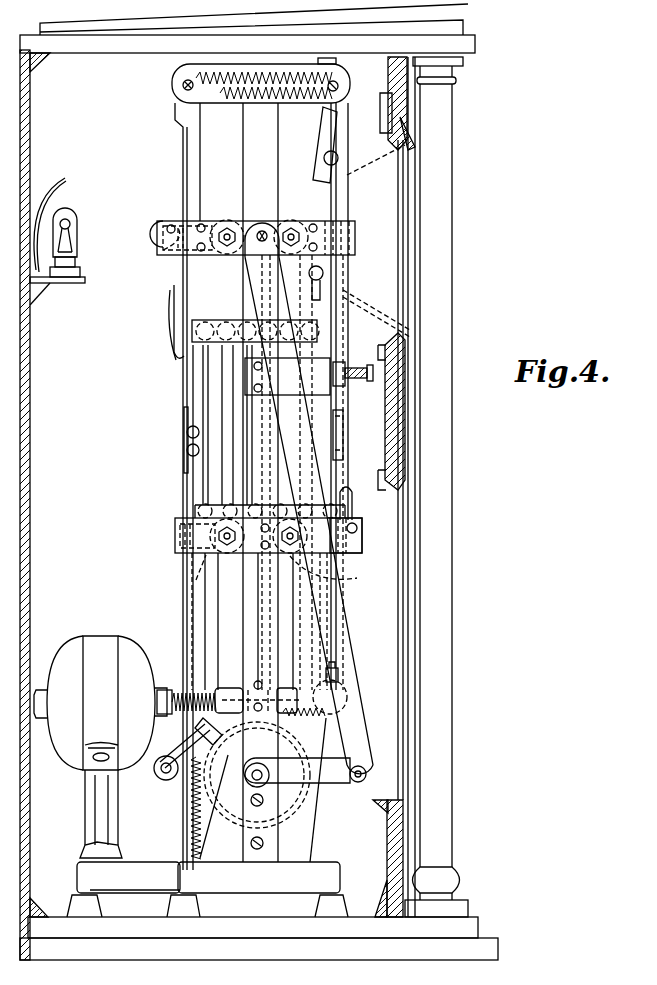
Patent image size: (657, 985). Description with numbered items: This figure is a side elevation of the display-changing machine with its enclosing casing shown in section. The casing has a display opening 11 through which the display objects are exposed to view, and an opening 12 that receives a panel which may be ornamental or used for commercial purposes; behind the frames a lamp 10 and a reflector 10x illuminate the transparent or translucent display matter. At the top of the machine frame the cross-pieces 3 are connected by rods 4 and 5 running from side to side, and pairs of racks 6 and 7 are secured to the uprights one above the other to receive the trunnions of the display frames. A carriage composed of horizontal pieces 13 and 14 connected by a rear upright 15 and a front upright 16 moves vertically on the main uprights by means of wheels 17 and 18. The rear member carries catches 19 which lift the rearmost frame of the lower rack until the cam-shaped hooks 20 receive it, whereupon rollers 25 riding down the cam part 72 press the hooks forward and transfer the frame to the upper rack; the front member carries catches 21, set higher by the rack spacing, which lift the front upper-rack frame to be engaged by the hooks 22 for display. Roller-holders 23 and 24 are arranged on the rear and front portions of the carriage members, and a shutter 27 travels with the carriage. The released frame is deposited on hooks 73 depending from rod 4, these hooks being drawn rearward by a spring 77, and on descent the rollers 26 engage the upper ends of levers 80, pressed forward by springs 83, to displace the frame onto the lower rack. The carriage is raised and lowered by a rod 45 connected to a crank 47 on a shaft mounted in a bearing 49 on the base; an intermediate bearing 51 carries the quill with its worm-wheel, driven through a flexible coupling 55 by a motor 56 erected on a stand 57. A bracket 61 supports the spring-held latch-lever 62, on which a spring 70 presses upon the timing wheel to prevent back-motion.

The cross-pieces 3 is at (224, 104).
The rod 4 is at (339, 91).
The rod 5 is at (184, 87).
The racks 6 is at (230, 318).
The racks 7 is at (215, 508).
The lamp 10 is at (75, 232).
The reflector 10x is at (68, 180).
The display opening 11 is at (405, 192).
The opening 12 is at (400, 613).
The horizontal piece 13 is at (178, 524).
The horizontal piece 14 is at (205, 258).
The upright 15 is at (182, 396).
The upright 16 is at (344, 432).
The wheels 17 is at (345, 580).
The wheels 18 is at (292, 216).
The catches 19 is at (186, 454).
The cam-shaped hooks 20 is at (170, 350).
The catches 21 is at (312, 284).
The cam-shaped hooks 22 is at (322, 157).
The roller-holder 23 is at (163, 252).
The roller-holder 24 is at (363, 546).
The rollers 25 is at (152, 223).
The rollers 26 is at (358, 528).
The shutter 27 is at (350, 330).
The rod 45 is at (359, 703).
The crank 47 is at (335, 785).
The bearing 49 is at (306, 833).
The bearing 51 is at (195, 822).
The flexible coupling 55 is at (186, 690).
The motor 56 is at (100, 740).
The stand 57 is at (88, 824).
The bracket 61 is at (164, 780).
The latch-lever 62 is at (192, 744).
The spring 70 is at (336, 63).
The cam part 72 is at (176, 312).
The hooks 73 is at (349, 205).
The spring 77 is at (300, 106).
The levers 80 is at (354, 495).
The springs 83 is at (308, 708).